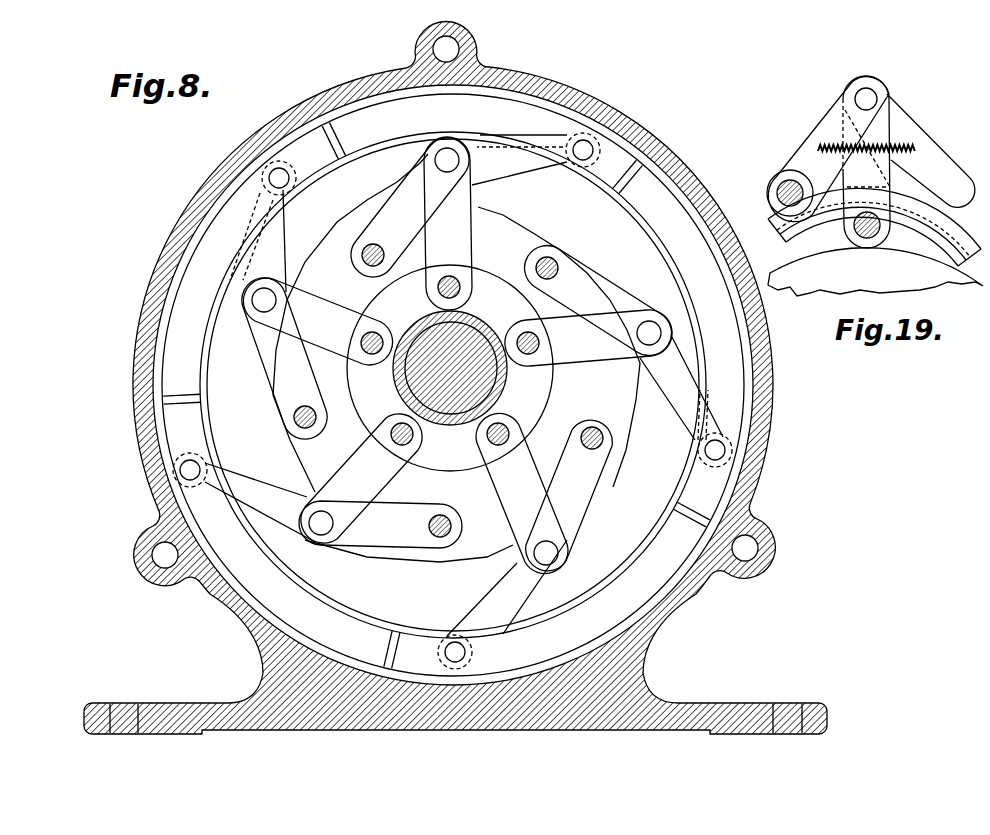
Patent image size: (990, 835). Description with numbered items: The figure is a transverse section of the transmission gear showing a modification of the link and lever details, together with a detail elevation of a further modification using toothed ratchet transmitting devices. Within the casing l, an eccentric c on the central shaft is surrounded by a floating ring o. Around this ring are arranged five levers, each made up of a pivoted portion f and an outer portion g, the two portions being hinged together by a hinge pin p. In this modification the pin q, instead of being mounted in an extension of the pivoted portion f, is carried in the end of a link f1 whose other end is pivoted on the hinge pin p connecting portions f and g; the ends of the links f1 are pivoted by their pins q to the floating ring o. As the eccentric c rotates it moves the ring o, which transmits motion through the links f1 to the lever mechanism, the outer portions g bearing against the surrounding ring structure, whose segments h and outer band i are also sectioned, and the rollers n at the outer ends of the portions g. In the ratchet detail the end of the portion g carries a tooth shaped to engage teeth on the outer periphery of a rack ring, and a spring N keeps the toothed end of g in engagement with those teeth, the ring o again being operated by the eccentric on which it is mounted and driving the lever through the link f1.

In FIG. 8, the casing l is at (762, 375).
In FIG. 19, the casing l is at (953, 225).
In FIG. 8, the outer ring of stator band i is at (673, 200).
In FIG. 8, the floating ring o is at (212, 372).
In FIG. 19, the floating ring o is at (823, 260).
In FIG. 8, the ring segment divider h is at (627, 170).
In FIG. 8, the eccentric c is at (397, 395).
In FIG. 8, the roller n is at (279, 417).
In FIG. 19, the roller n is at (787, 190).
In FIG. 8, the portion of the lever g is at (507, 155).
In FIG. 19, the portion of the lever g is at (936, 150).
In FIG. 8, the pivoted portion of the lever f is at (410, 182).
In FIG. 19, the pivoted portion of the lever f is at (830, 127).
In FIG. 8, the link f1 is at (462, 233).
In FIG. 19, the link f1 is at (882, 163).
In FIG. 8, the hinge pin p is at (256, 304).
In FIG. 19, the hinge pin p is at (877, 100).
In FIG. 8, the pin q is at (380, 335).
In FIG. 19, the pin q is at (882, 227).
In FIG. 19, the spring N is at (910, 148).